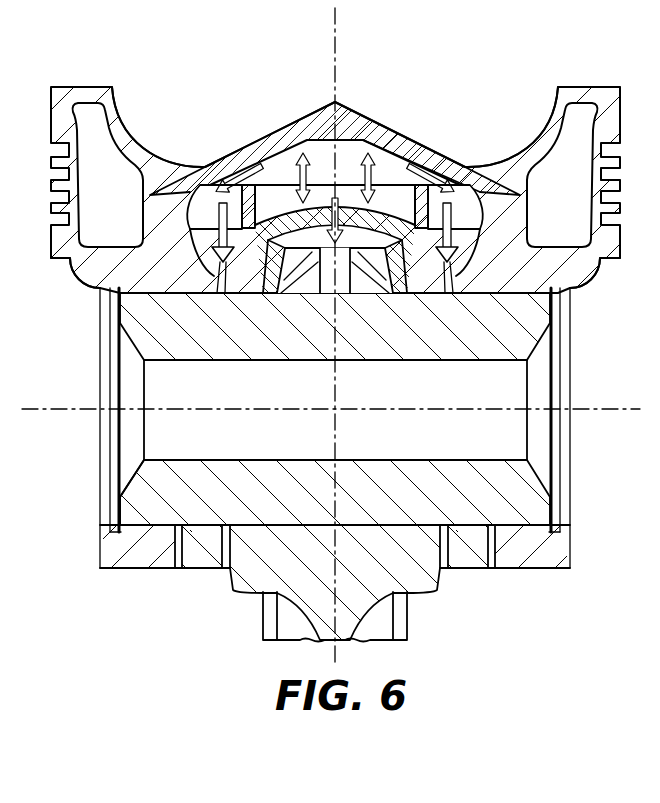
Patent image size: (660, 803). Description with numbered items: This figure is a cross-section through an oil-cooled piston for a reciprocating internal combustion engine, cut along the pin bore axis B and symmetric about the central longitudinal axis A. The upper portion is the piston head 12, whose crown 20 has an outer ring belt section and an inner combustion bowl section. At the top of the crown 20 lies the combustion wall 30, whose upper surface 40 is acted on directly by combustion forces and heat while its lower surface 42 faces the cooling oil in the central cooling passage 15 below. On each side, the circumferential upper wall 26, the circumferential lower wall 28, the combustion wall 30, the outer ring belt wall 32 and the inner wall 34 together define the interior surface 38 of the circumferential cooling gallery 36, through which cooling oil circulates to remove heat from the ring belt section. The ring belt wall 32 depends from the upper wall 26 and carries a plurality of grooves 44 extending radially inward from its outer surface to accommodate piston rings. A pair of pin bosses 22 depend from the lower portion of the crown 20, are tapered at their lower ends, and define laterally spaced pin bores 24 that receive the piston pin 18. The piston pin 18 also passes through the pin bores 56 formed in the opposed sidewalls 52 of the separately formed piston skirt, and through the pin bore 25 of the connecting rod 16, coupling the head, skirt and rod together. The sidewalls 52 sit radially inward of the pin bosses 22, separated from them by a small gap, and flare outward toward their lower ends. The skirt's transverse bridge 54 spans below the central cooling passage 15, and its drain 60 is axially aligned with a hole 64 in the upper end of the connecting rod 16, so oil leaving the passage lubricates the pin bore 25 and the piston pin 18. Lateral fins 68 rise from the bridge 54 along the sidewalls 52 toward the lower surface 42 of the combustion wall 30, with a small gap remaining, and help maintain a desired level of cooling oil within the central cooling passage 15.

The piston head 12 is at (48, 107).
The central cooling passage 15 is at (347, 150).
The connecting rod 16 is at (264, 627).
The piston pin 18 is at (135, 343).
The crown 20 is at (50, 241).
The pin bosses 22 is at (103, 552).
The pin bores 24 is at (131, 524).
The pin bore 25 is at (362, 293).
The circumferential upper wall 26 is at (92, 87).
The circumferential lower wall 28 is at (558, 248).
The combustion wall 30 is at (250, 148).
The outer ring belt wall 32 is at (620, 108).
The inner wall 34 is at (528, 197).
The circumferential cooling gallery 36 is at (577, 110).
The interior surface 38 is at (552, 146).
The upper surface 40 is at (382, 214).
The lower surface 42 is at (325, 141).
The grooves 44 is at (612, 158).
The sidewalls 52 is at (475, 567).
The transverse bridge 54 is at (398, 176).
The pin bores 56 is at (473, 527).
The drain 60 is at (315, 221).
The hole 64 is at (325, 288).
The lateral fins 68 is at (206, 192).
The central longitudinal axis A is at (333, 24).
The pin bore axis B is at (608, 410).